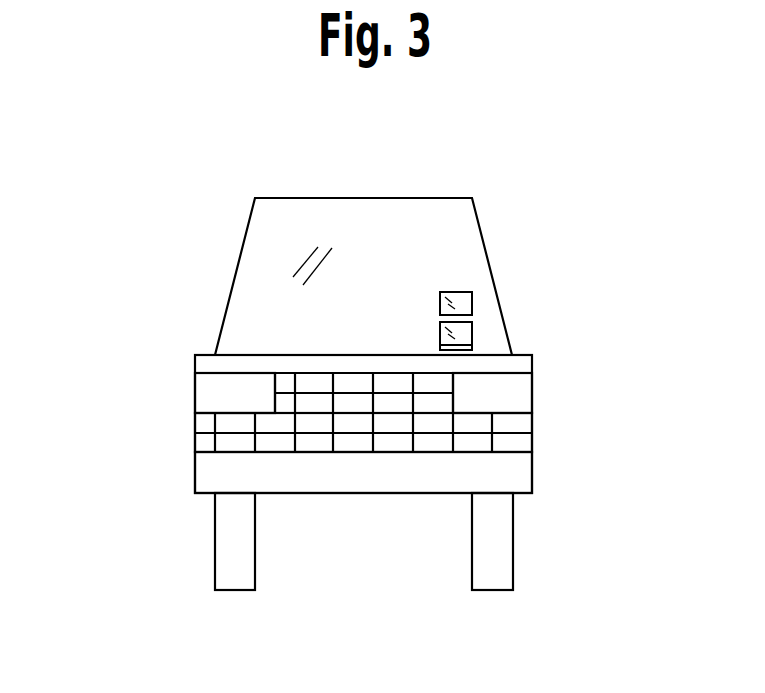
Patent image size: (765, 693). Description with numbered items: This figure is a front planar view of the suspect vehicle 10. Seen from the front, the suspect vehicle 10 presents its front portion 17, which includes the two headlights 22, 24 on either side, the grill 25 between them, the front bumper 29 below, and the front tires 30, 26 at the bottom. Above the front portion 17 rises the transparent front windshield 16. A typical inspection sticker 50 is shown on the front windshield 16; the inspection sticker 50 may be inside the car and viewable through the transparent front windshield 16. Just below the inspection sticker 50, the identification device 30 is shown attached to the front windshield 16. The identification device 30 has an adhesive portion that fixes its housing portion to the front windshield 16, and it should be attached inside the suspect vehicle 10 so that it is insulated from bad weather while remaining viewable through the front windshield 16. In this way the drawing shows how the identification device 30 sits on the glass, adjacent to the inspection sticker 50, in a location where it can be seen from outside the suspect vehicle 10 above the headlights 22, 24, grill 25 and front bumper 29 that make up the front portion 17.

The suspect vehicle 10 is at (493, 143).
The front windshield 16 is at (337, 212).
The front portion 17 is at (323, 360).
The headlight 22 is at (217, 405).
The headlight 24 is at (523, 392).
The grill 25 is at (393, 442).
The tire 26 is at (497, 582).
The front bumper 29 is at (322, 482).
The first identification device 30 is at (465, 333).
The inspection sticker 50 is at (460, 302).